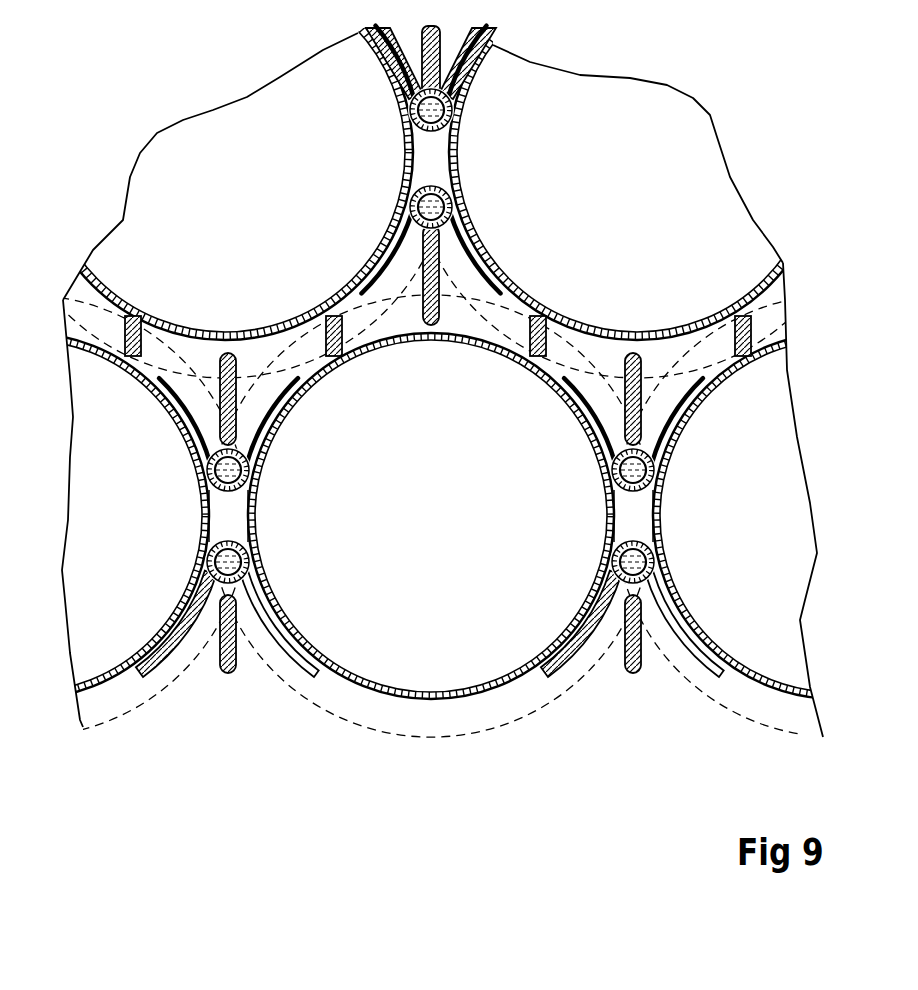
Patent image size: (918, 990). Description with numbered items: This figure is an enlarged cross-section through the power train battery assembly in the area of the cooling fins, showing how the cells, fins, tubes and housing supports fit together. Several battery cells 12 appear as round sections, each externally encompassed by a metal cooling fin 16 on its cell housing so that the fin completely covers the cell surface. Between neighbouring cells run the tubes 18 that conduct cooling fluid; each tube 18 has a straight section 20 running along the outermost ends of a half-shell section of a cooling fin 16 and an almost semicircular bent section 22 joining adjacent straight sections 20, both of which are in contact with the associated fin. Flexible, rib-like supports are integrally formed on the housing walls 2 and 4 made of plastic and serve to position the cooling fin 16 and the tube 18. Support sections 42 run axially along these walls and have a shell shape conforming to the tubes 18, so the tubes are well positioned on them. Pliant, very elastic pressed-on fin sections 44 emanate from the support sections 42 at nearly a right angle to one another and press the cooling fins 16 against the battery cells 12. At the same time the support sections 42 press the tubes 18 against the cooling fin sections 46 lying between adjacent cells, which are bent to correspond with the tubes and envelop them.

The wall 2 is at (459, 403).
The wall 4 is at (459, 349).
The battery cell 12 is at (241, 208).
The cooling fin 16 is at (430, 345).
The tube 18 is at (429, 336).
The straight section 20 is at (203, 470).
The bent section 22 is at (702, 342).
The support section 42 is at (429, 305).
The pressed-on fin section 44 is at (297, 633).
The cooling fin section 46 is at (257, 527).